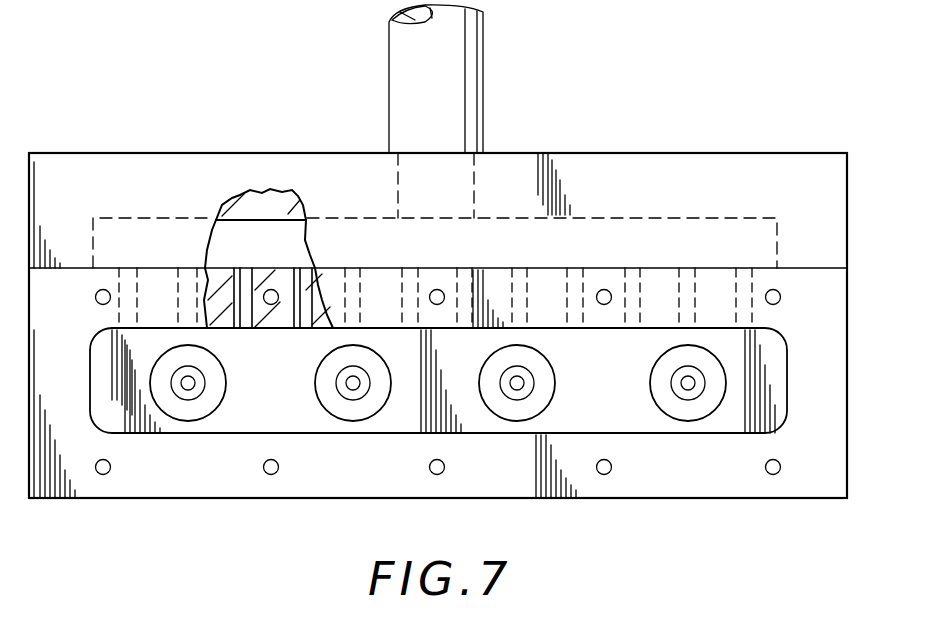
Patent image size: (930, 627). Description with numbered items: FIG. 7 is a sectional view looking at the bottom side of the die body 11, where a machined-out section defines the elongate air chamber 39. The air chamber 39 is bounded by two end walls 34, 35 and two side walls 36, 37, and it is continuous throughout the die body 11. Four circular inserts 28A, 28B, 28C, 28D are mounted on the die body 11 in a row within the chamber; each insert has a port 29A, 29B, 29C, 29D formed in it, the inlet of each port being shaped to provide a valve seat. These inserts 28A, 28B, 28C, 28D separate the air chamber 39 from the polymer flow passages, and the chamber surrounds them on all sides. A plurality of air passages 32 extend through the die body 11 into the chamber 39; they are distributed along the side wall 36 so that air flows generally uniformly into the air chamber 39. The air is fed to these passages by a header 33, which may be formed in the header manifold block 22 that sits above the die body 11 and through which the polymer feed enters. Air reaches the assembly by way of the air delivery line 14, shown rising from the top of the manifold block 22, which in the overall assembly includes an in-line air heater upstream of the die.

The die body 11 is at (126, 500).
The air delivery line 14 is at (412, 66).
The header manifold 22 is at (607, 152).
The circular insert 28A is at (184, 413).
The circular insert 28B is at (343, 411).
The circular insert 28C is at (510, 409).
The circular insert 28D is at (668, 404).
The port 29A is at (192, 388).
The port 29B is at (357, 390).
The port 29C is at (521, 389).
The port 29D is at (694, 388).
The air passages 32 is at (243, 280).
The header 33 is at (287, 252).
The end wall 34 is at (62, 390).
The end wall 35 is at (818, 372).
The side wall 36 is at (655, 295).
The side wall 37 is at (693, 478).
The elongate air chamber 39 is at (298, 403).